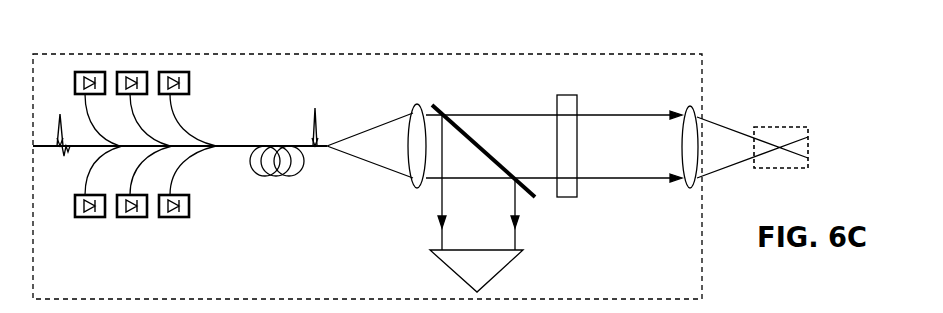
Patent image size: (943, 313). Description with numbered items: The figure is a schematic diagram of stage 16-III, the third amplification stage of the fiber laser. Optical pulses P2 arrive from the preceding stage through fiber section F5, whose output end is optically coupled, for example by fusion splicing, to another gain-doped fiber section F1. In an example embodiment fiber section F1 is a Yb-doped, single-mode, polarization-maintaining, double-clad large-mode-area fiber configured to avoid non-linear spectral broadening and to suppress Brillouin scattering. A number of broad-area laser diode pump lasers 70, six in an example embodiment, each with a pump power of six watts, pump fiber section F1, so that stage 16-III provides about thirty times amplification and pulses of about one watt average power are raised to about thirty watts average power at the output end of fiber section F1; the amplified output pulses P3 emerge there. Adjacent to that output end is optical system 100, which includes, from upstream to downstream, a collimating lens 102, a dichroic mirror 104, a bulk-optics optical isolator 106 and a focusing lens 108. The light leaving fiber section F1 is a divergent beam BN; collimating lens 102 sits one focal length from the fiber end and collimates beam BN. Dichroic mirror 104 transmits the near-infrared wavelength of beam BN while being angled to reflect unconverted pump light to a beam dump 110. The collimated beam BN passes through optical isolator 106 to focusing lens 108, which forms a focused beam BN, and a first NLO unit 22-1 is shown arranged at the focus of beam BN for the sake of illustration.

The broad-area laser diode pump laser 70 is at (190, 84).
The gain-doped fiber section F1 is at (243, 145).
The optical pulses P2 is at (57, 128).
The fiber section F5 is at (72, 147).
The output optical pulse P3 is at (316, 113).
The collimating lens 102 is at (415, 104).
The dichroic mirror 104 is at (432, 105).
The bulk-optics optical isolator 106 is at (565, 94).
The beam BN is at (597, 115).
The focusing lens 108 is at (690, 188).
The beam dump 110 is at (500, 268).
The first NLO unit 22-1 is at (772, 127).
The optical system 100 is at (625, 261).
The stage 16-III is at (367, 284).